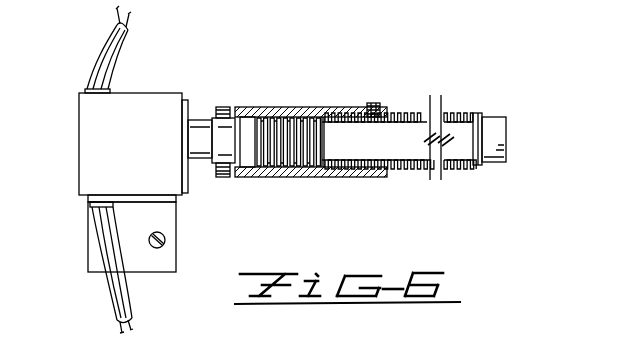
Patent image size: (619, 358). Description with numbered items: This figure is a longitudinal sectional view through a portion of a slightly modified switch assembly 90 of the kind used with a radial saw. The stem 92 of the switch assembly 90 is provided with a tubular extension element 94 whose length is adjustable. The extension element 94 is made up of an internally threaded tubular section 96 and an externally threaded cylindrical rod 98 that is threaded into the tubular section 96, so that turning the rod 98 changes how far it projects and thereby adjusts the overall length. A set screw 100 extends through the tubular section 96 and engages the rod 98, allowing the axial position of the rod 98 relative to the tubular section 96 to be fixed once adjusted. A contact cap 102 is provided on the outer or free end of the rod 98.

The switch assembly 90 is at (78, 149).
The stem 92 is at (212, 113).
The tubular extension element 94 is at (331, 176).
The internally threaded tubular section 96 is at (266, 113).
The externally threaded cylindrical rod 98 is at (398, 134).
The set screw 100 is at (377, 102).
The contact cap 102 is at (490, 126).